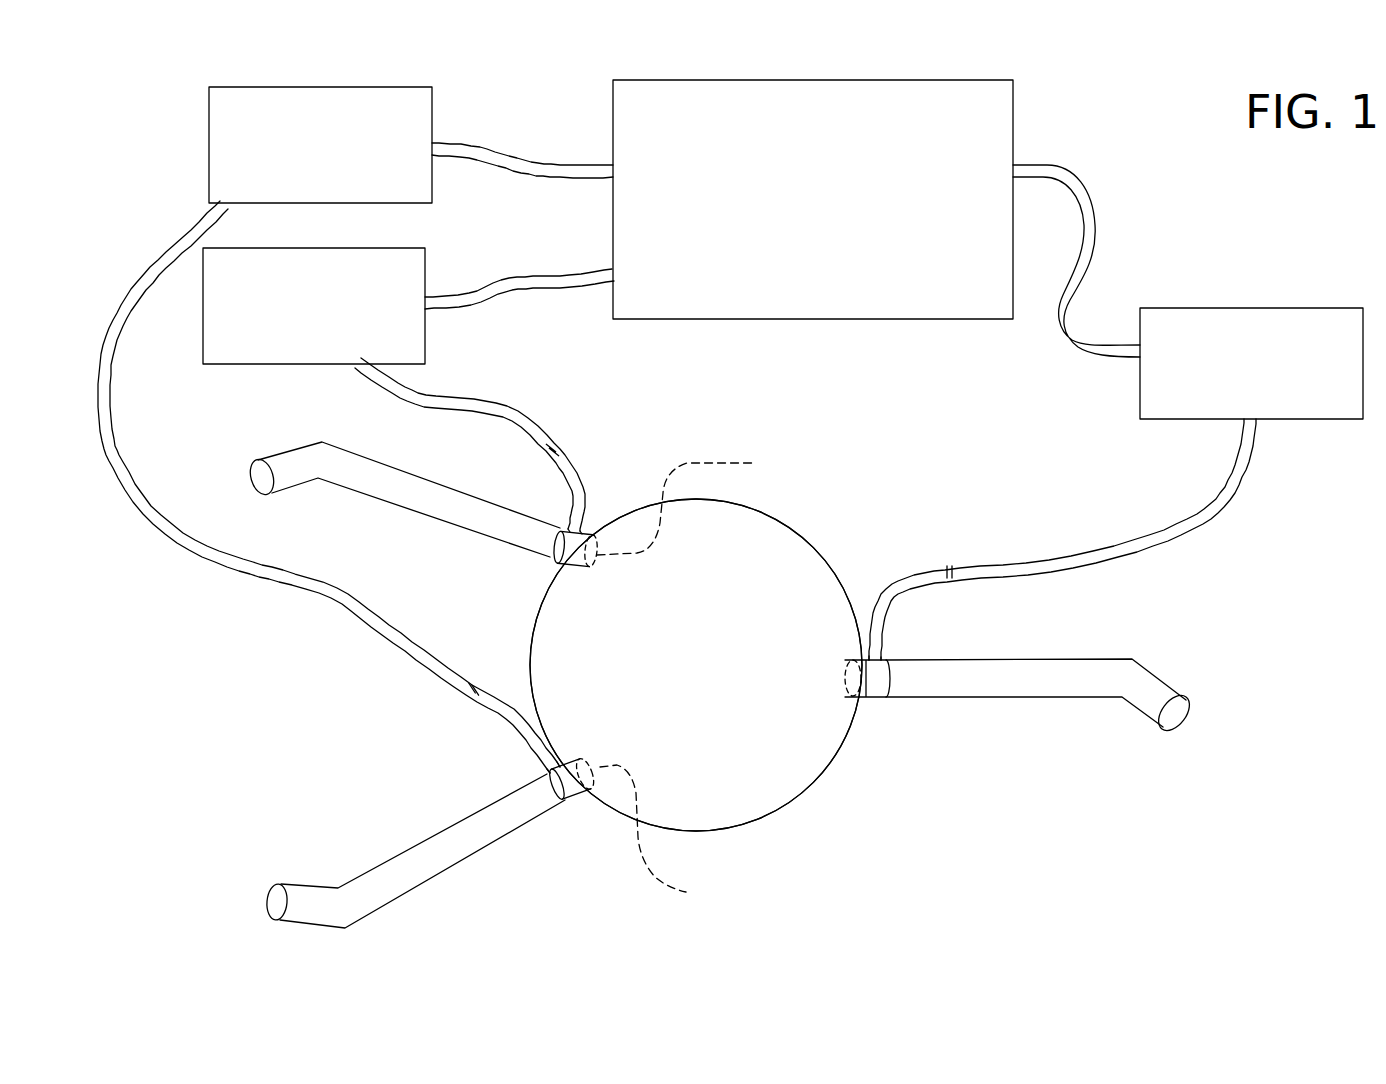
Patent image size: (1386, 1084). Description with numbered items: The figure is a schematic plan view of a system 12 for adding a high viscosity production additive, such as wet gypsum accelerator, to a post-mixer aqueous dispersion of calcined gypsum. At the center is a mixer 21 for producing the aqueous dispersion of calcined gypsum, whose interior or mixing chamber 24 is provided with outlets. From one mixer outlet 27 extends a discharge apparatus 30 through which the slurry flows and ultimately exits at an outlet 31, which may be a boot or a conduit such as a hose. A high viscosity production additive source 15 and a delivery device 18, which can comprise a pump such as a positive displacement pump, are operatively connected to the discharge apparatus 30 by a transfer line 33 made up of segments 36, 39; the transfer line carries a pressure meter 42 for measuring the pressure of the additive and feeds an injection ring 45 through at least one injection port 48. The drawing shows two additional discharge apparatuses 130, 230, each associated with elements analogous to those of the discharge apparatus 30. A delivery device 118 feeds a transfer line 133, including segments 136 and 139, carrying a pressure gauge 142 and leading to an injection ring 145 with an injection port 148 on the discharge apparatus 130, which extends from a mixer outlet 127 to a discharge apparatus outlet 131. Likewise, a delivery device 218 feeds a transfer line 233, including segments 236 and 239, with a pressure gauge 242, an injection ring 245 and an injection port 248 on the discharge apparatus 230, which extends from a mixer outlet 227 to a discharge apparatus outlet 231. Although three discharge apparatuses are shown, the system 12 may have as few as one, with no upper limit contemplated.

The system 12 is at (1137, 834).
The high viscosity production additive source 15 is at (1013, 93).
The delivery device 18 is at (1348, 317).
The mixer 21 is at (770, 843).
The mixing chamber 24 is at (808, 671).
The mixer outlet 27 is at (847, 670).
The discharge apparatus 30 is at (1017, 660).
The outlet 31 is at (1175, 715).
The transfer line 33 is at (1136, 520).
The transfer line segment 36 is at (1083, 270).
The transfer line segment 39 is at (1135, 552).
The pressure meter 42 is at (951, 568).
The injection ring 45 is at (880, 678).
The injection port 48 is at (861, 660).
The delivery device 118 is at (242, 124).
The mixer outlet 127 is at (668, 834).
The discharge apparatus 130 is at (380, 890).
The discharge apparatus outlet 131 is at (280, 903).
The transfer line 133 is at (220, 227).
The transfer line segment 136 is at (513, 158).
The transfer line segment 139 is at (127, 302).
The pressure gauge 142 is at (473, 680).
The injection ring 145 is at (563, 790).
The injection port 148 is at (547, 773).
The delivery device 218 is at (235, 343).
The mixer outlet 227 is at (702, 504).
The discharge apparatus 230 is at (415, 503).
The discharge apparatus outlet 231 is at (262, 478).
The transfer line 233 is at (489, 305).
The transfer line segment 236 is at (563, 288).
The transfer line segment 239 is at (510, 410).
The pressure gauge 242 is at (556, 446).
The injection ring 245 is at (560, 555).
The injection port 248 is at (582, 513).